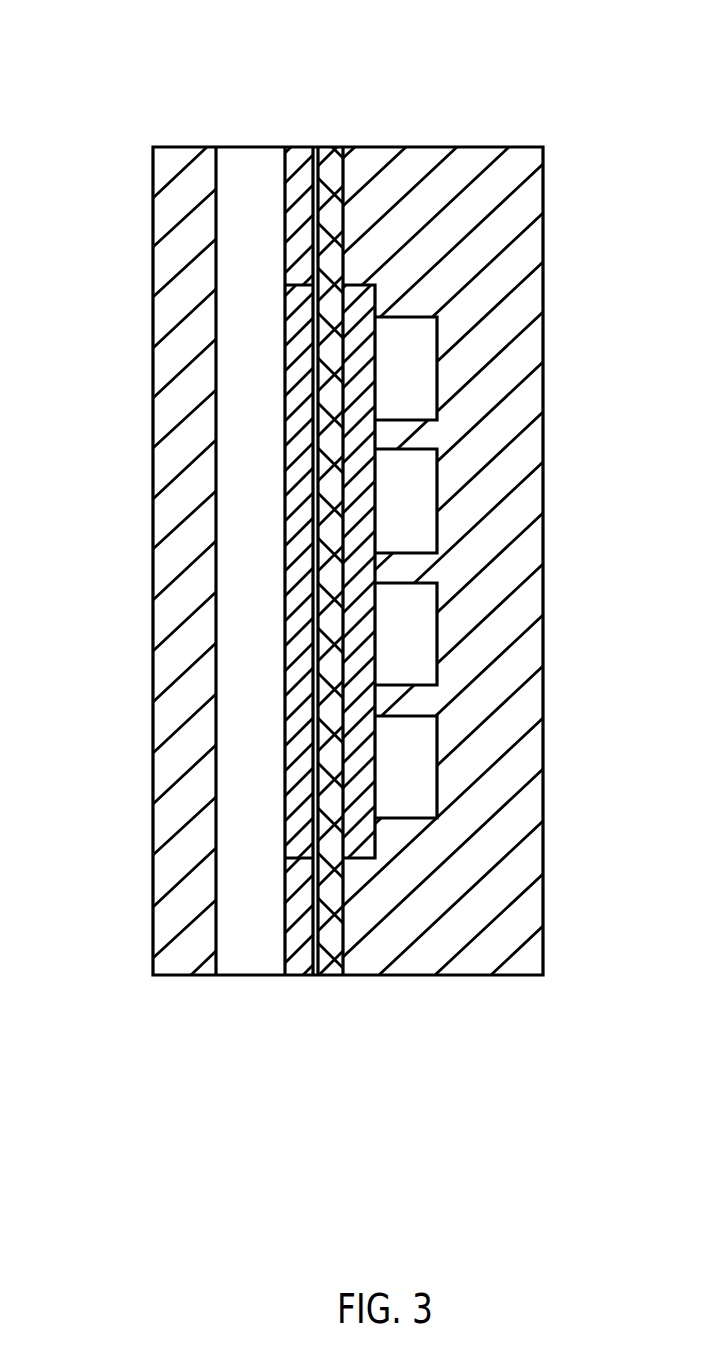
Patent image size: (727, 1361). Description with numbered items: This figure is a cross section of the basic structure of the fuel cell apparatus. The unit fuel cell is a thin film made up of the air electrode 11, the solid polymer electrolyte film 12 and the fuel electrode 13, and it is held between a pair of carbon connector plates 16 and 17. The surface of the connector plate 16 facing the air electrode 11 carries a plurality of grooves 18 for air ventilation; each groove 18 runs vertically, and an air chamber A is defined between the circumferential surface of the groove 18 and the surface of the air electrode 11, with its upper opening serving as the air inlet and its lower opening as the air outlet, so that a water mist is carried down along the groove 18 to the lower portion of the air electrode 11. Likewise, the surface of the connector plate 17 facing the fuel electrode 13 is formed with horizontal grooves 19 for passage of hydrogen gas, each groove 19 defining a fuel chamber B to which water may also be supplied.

The air electrode 11 is at (285, 802).
The solid polymer electrolyte film 12 is at (328, 975).
The fuel electrode 13 is at (370, 860).
The carbon connector plate 16 is at (180, 147).
The carbon connector plate 17 is at (468, 147).
The groove 18 is at (238, 553).
The groove 19 is at (595, 797).